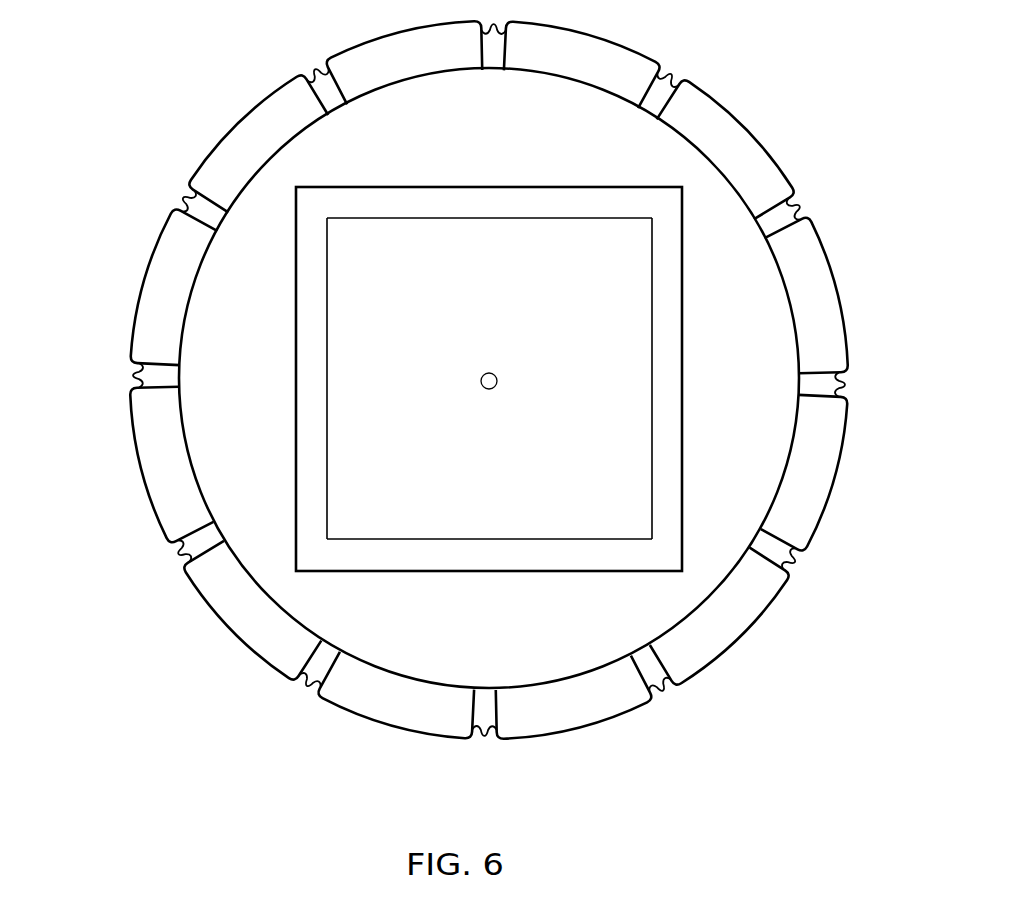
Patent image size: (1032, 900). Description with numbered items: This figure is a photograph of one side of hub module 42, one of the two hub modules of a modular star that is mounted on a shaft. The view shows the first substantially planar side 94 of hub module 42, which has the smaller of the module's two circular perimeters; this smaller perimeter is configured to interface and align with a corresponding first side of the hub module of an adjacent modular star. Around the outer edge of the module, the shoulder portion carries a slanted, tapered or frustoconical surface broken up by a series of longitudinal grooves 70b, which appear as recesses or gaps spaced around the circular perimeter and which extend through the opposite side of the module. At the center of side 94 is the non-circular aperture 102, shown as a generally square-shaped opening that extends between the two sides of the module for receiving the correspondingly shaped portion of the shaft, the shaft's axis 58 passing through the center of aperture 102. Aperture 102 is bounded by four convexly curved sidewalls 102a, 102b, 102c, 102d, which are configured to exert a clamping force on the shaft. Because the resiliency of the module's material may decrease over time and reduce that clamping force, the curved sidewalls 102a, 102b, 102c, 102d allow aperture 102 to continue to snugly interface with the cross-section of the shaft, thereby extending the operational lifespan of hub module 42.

The first hub module 42 is at (135, 123).
The first substantially planar side 94 is at (258, 220).
The longitudinal grooves 70b is at (671, 78).
The axis 58 is at (496, 373).
The non-circular aperture 102 is at (382, 413).
The convexly curved sidewall 102a is at (504, 218).
The convexly curved sidewall 102b is at (652, 410).
The convexly curved sidewall 102c is at (487, 539).
The convexly curved sidewall 102d is at (327, 368).